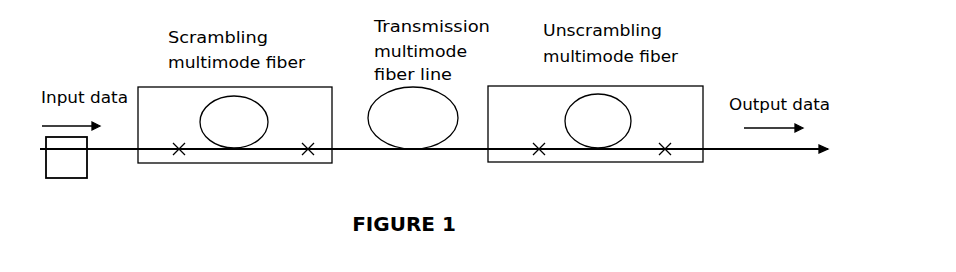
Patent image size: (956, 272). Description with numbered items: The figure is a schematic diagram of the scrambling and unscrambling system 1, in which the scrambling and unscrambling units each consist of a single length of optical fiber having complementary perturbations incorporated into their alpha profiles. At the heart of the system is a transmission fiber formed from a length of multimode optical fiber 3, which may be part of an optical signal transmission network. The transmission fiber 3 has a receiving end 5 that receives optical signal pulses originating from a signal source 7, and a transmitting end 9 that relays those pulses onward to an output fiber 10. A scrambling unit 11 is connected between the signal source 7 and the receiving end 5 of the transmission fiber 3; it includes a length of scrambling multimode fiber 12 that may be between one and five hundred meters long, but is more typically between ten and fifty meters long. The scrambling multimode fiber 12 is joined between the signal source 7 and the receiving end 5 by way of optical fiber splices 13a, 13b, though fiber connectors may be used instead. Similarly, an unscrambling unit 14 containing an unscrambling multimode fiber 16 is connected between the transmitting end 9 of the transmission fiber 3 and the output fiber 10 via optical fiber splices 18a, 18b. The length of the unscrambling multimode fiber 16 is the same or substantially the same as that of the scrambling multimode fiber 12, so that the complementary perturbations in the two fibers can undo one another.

The scrambling and unscrambling system 1 is at (49, 35).
The signal source 7 is at (60, 167).
The scrambling unit 11 is at (147, 86).
The scrambling multimode fiber 12 is at (225, 132).
The optical fiber splice 13a is at (180, 155).
The optical fiber splice 13b is at (306, 155).
The receiving end 5 is at (339, 151).
The multimode optical fiber 3 is at (404, 129).
The transmitting end 9 is at (483, 151).
The unscrambling unit 14 is at (514, 85).
The unscrambling multimode fiber 16 is at (589, 131).
The optical fiber splice 18a is at (540, 155).
The optical fiber splice 18b is at (665, 155).
The output fiber 10 is at (770, 151).